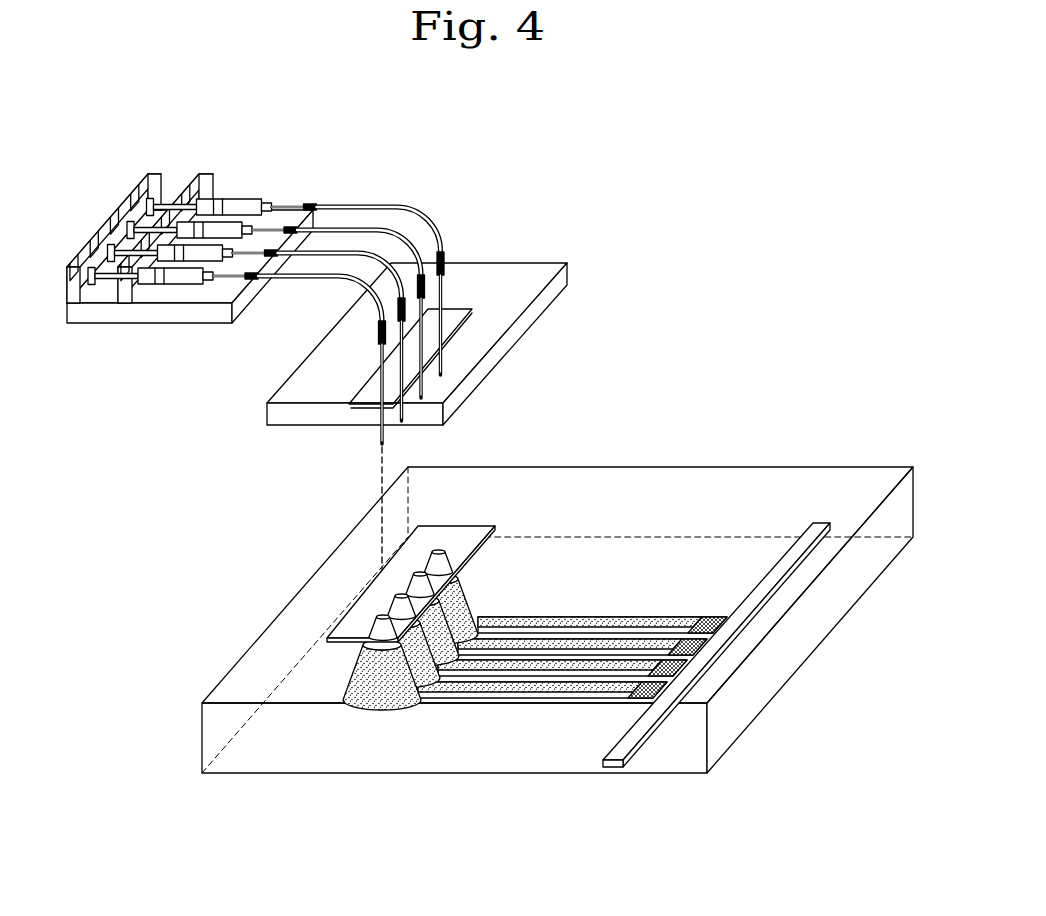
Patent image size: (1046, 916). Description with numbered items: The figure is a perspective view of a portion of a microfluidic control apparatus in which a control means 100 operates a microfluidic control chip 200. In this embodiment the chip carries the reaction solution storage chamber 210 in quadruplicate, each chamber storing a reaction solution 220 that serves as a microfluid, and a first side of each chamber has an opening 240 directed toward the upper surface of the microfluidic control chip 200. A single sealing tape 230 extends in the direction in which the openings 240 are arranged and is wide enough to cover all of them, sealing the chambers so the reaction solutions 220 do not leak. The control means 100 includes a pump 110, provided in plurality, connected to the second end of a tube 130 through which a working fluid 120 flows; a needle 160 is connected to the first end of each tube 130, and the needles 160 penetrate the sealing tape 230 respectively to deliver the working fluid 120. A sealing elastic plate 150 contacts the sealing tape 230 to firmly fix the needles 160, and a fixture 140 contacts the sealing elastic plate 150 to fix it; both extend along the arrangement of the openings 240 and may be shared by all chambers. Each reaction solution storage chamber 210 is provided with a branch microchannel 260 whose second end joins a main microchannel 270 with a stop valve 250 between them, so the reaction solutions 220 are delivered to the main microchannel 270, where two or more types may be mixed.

The control means 100 is at (513, 150).
The pump 110 is at (170, 312).
The working fluid 120 is at (347, 204).
The tube 130 is at (418, 205).
The fixture 140 is at (568, 272).
The sealing elastic plate 150 is at (457, 321).
The needle 160 is at (448, 282).
The microfluidic control chip 200 is at (826, 465).
The reaction solution storage chamber 210 is at (345, 680).
The reaction solution 220 is at (362, 688).
The sealing tape 230 is at (465, 540).
The opening 240 is at (382, 611).
The stop valve 250 is at (702, 615).
The branch microchannel 260 is at (628, 615).
The main microchannel 270 is at (787, 553).